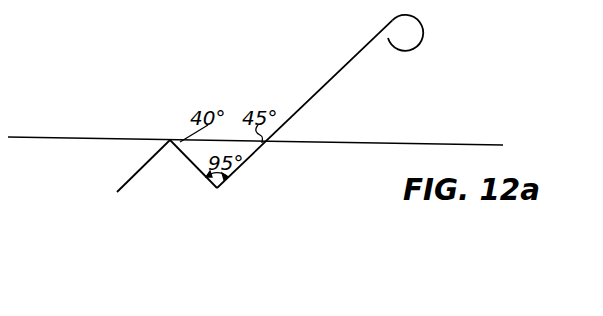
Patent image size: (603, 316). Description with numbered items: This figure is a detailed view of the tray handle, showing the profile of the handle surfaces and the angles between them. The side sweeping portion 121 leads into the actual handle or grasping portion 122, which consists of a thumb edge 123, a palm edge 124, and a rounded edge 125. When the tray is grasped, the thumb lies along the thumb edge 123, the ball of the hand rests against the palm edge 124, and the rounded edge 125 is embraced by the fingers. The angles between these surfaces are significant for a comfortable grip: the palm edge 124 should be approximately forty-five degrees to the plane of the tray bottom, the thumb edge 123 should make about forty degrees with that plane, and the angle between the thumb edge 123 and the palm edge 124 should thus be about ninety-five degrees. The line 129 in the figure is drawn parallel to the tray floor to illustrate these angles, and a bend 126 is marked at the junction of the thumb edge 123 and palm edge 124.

The side sweeping portion 121 is at (124, 183).
The handle or grasping portion 122 is at (212, 98).
The thumb edge 123 is at (207, 179).
The palm edge 124 is at (338, 72).
The rounded edge 125 is at (415, 47).
The bend vertex 126 is at (220, 190).
The line 129 is at (437, 147).